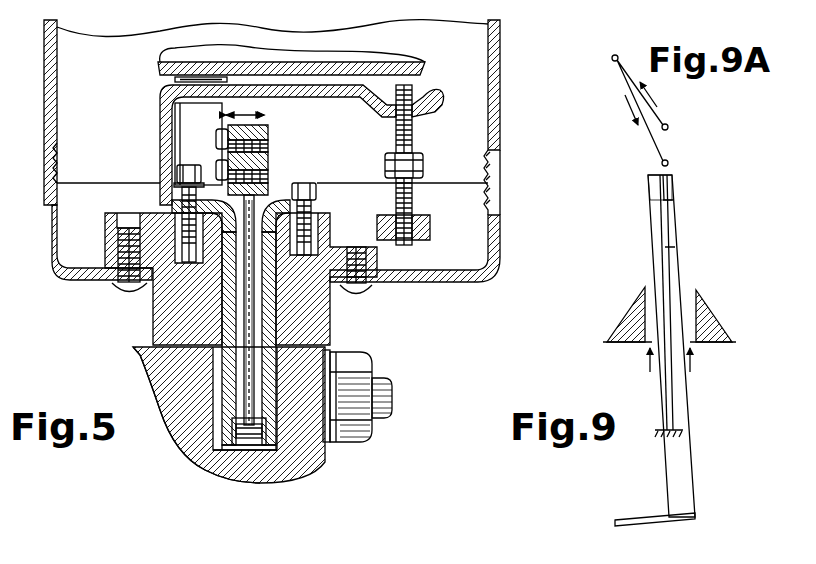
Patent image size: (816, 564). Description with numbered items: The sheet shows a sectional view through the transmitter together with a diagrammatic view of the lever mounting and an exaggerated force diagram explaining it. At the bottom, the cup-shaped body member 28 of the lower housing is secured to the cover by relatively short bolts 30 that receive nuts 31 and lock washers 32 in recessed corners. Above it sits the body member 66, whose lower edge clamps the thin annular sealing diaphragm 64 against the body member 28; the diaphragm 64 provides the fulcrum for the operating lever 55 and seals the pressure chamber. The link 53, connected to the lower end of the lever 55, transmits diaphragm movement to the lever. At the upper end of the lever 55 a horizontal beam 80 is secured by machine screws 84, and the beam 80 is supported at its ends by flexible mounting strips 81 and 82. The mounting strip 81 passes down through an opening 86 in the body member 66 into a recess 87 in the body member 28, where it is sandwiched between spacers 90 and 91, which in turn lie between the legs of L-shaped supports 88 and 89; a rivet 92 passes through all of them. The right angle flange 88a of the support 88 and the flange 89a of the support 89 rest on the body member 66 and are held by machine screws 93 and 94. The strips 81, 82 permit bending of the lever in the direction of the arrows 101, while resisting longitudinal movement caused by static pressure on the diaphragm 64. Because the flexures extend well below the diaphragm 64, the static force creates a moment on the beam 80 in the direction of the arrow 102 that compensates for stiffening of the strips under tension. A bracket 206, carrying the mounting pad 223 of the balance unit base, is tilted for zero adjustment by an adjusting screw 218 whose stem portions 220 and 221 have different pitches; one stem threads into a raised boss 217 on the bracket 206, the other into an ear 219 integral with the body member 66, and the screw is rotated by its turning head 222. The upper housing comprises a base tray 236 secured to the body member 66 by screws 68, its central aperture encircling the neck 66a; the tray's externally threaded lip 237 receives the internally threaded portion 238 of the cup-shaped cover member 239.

In FIG. 5, the body member 28 is at (160, 428).
In FIG. 5, the bolt 30 is at (389, 390).
In FIG. 5, the nut 31 is at (373, 363).
In FIG. 5, the lock washer 32 is at (327, 446).
In FIG. 9, the link 53 is at (642, 515).
In FIG. 9, the operating lever 55 is at (680, 283).
In FIG. 9, the sealing diaphragm 64 is at (699, 320).
In FIG. 5, the body member 66 is at (375, 267).
In FIG. 5, the neck 66a is at (160, 318).
In FIG. 5, the screw 68 is at (118, 290).
In FIG. 5, the horizontal beam 80 is at (258, 157).
In FIG. 9, the horizontal beam 80 is at (672, 178).
In FIG. 5, the mounting strip 81 is at (255, 340).
In FIG. 9, the mounting strip 81 is at (668, 248).
In FIG. 9, the mounting strip 82 is at (669, 306).
In FIG. 5, the machine screw 84 is at (268, 149).
In FIG. 5, the opening 86 is at (271, 296).
In FIG. 5, the recess 87 is at (272, 410).
In FIG. 5, the L-shaped support 88 is at (226, 272).
In FIG. 5, the right angle flange 88a is at (172, 202).
In FIG. 5, the L-shaped support 89 is at (259, 314).
In FIG. 5, the right angle flange 89a is at (320, 211).
In FIG. 5, the spacer 90 is at (237, 442).
In FIG. 5, the spacer 91 is at (248, 446).
In FIG. 5, the rivet 92 is at (266, 439).
In FIG. 5, the machine screw 93 is at (201, 170).
In FIG. 5, the machine screw 94 is at (302, 183).
In FIG. 5, the arrows 101 is at (258, 112).
In FIG. 9A, the arrow 102 is at (602, 48).
In FIG. 9, the arrow 102 is at (677, 187).
In FIG. 5, the bracket 206 is at (318, 98).
In FIG. 5, the raised boss 217 is at (440, 100).
In FIG. 5, the adjusting screw 218 is at (415, 186).
In FIG. 5, the ear 219 is at (426, 240).
In FIG. 5, the stem portion 220 is at (413, 121).
In FIG. 5, the stem portion 221 is at (413, 202).
In FIG. 5, the turning head 222 is at (388, 158).
In FIG. 5, the mounting pad 223 is at (175, 80).
In FIG. 5, the base tray 236 is at (492, 233).
In FIG. 5, the externally threaded lip 237 is at (500, 198).
In FIG. 5, the internally threaded portion 238 is at (294, 171).
In FIG. 5, the cover member 239 is at (503, 70).